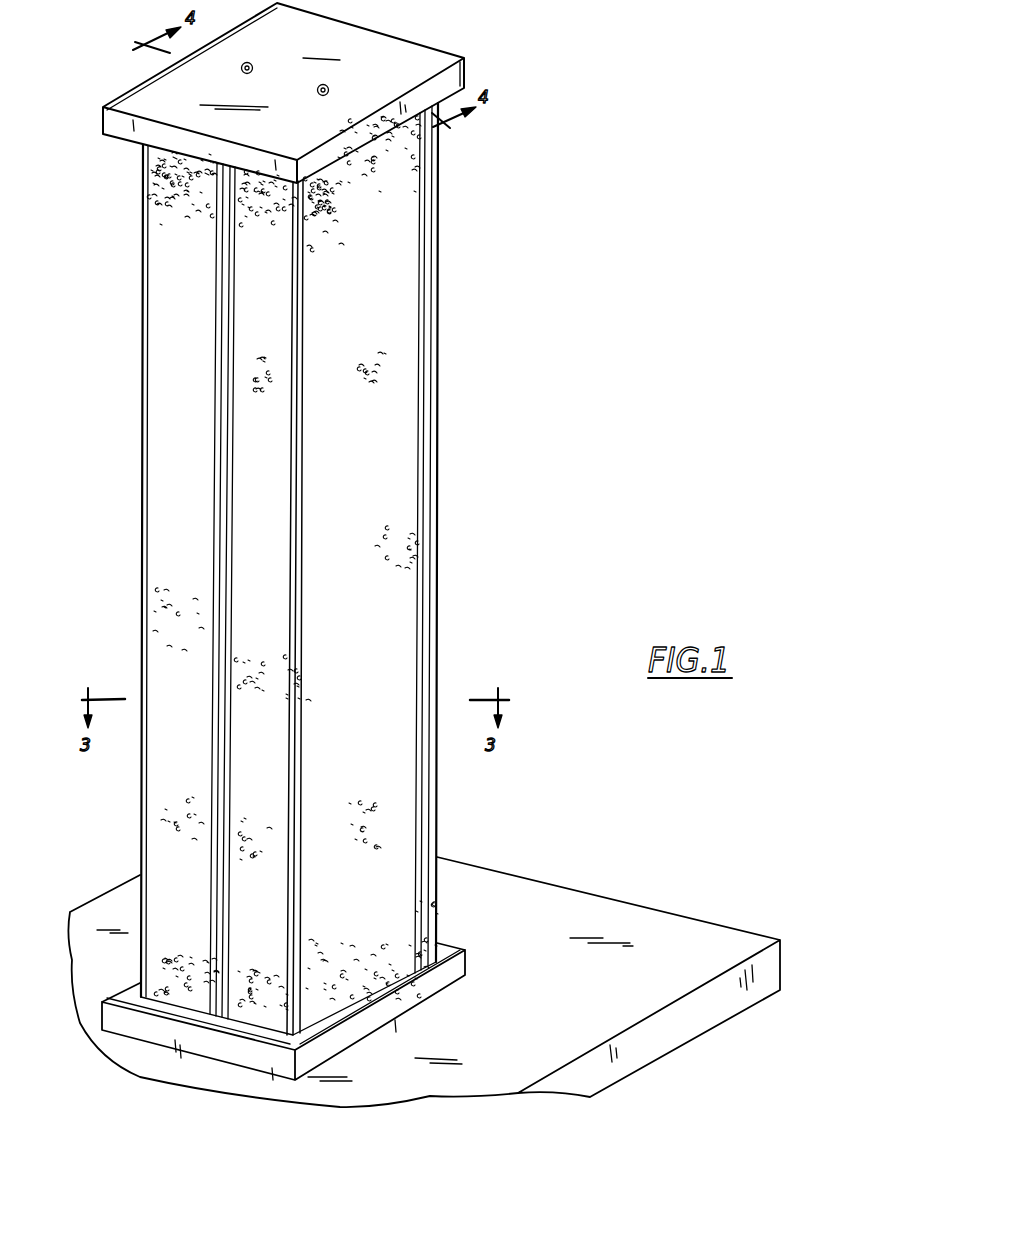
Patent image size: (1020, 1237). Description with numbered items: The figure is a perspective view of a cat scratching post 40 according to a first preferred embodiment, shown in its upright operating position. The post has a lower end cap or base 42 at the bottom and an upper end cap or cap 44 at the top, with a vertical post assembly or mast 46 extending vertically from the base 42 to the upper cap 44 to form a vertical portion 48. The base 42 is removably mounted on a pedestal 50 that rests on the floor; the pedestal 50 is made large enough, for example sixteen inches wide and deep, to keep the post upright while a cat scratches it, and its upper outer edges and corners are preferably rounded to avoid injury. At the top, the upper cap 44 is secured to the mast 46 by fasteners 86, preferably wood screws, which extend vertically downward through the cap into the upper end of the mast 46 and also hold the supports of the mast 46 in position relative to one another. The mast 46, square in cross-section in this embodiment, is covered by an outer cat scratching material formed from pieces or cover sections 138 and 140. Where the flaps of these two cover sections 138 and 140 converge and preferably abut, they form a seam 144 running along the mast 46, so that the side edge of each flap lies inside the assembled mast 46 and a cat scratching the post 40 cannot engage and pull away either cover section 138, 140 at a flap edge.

The cat scratching post 40 is at (358, 569).
The base 42 is at (463, 971).
The upper end cap 44 is at (465, 78).
The mast 46 is at (415, 483).
The vertical portion 48 is at (450, 416).
The pedestal 50 is at (593, 937).
The fasteners 86 is at (254, 64).
The cover section 138 is at (155, 400).
The cover section 140 is at (420, 355).
The seam 144 is at (225, 428).